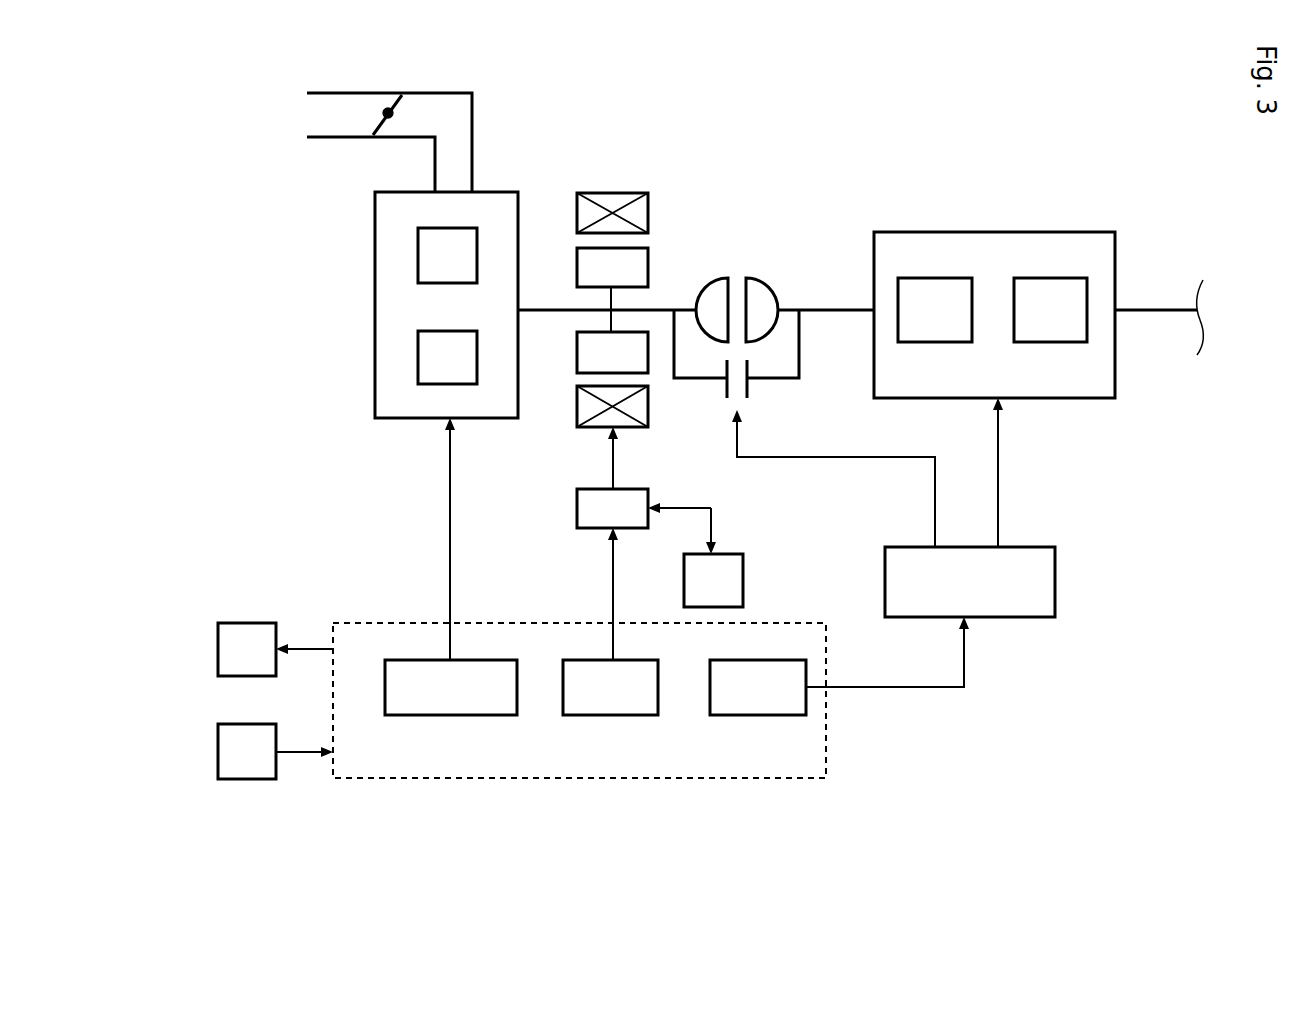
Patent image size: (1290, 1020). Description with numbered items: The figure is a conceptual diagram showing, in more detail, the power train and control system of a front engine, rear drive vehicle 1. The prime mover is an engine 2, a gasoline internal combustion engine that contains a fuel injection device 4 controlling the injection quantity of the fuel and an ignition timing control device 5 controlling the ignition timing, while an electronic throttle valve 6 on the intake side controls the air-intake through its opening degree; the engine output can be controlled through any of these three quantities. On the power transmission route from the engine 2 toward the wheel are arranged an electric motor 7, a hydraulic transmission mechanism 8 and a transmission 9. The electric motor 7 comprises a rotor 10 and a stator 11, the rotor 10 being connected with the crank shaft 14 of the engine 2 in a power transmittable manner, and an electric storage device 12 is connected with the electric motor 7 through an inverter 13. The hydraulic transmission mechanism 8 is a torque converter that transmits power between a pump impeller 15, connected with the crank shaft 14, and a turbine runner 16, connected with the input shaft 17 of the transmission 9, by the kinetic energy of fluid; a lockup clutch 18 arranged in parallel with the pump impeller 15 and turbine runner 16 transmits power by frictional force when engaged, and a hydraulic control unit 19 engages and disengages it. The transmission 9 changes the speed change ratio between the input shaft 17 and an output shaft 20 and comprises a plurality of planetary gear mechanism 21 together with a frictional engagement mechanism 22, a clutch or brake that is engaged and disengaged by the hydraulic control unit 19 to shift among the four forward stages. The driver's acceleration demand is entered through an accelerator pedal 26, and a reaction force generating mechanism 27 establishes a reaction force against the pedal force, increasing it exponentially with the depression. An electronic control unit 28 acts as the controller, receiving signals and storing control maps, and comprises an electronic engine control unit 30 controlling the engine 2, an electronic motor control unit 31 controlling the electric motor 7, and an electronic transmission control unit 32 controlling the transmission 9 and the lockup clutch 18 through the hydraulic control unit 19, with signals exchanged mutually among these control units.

The vehicle 1 is at (862, 148).
The engine 2 is at (497, 195).
The fuel injection device 4 is at (418, 262).
The ignition timing control device 5 is at (418, 357).
The electronic throttle valve 6 is at (396, 102).
The electric motor 7 is at (614, 254).
The hydraulic transmission mechanism 8 is at (763, 306).
The transmission 9 is at (985, 232).
The rotor 10 is at (577, 268).
The stator 11 is at (637, 192).
The electric storage device 12 is at (743, 578).
The inverter 13 is at (577, 512).
The crank shaft 14 is at (552, 312).
The pump impeller 15 is at (717, 292).
The turbine runner 16 is at (762, 302).
The input shaft 17 is at (838, 310).
The lockup clutch 18 is at (762, 395).
The hydraulic control unit 19 is at (1055, 583).
The output shaft 20 is at (1155, 312).
The planetary gear mechanism 21 is at (935, 342).
The frictional engagement mechanism 22 is at (1050, 342).
The accelerator pedal 26 is at (218, 755).
The reaction force generating mechanism 27 is at (218, 652).
The electronic control unit 28 is at (557, 785).
The electronic engine control unit 30 is at (452, 715).
The electronic motor control unit 31 is at (617, 715).
The electronic transmission control unit 32 is at (762, 715).